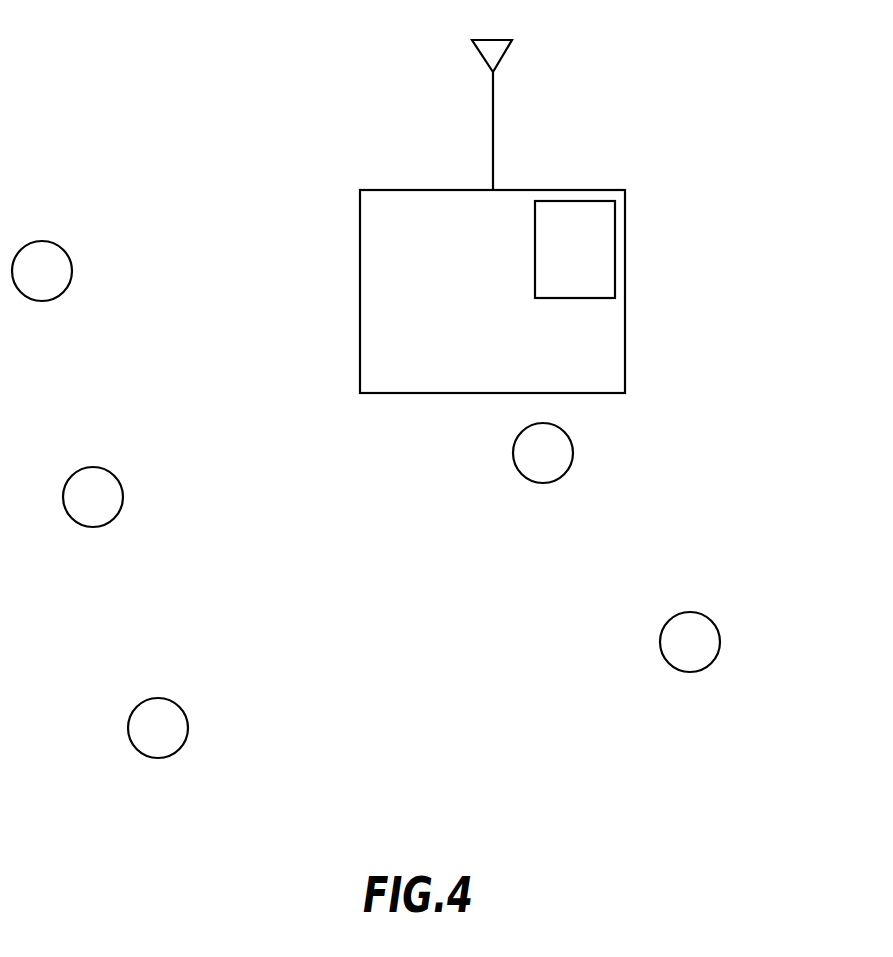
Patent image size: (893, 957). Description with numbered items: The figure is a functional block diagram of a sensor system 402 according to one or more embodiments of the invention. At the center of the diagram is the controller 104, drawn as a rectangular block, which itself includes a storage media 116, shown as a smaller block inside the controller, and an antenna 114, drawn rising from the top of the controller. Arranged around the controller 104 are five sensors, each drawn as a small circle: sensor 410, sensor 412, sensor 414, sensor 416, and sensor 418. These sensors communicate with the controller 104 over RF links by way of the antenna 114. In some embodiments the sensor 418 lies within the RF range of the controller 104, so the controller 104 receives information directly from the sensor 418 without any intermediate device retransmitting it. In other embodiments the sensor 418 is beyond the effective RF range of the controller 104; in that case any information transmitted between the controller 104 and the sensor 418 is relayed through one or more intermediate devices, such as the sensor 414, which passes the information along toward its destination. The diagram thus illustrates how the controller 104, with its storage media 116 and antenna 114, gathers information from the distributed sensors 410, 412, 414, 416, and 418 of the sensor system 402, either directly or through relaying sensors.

The sensor system 402 is at (160, 128).
The controller 104 is at (360, 238).
The antenna 114 is at (493, 153).
The storage media 116 is at (534, 218).
The sensor 410 is at (67, 288).
The sensor 412 is at (116, 513).
The sensor 414 is at (568, 468).
The sensor 416 is at (715, 657).
The sensor 418 is at (183, 742).